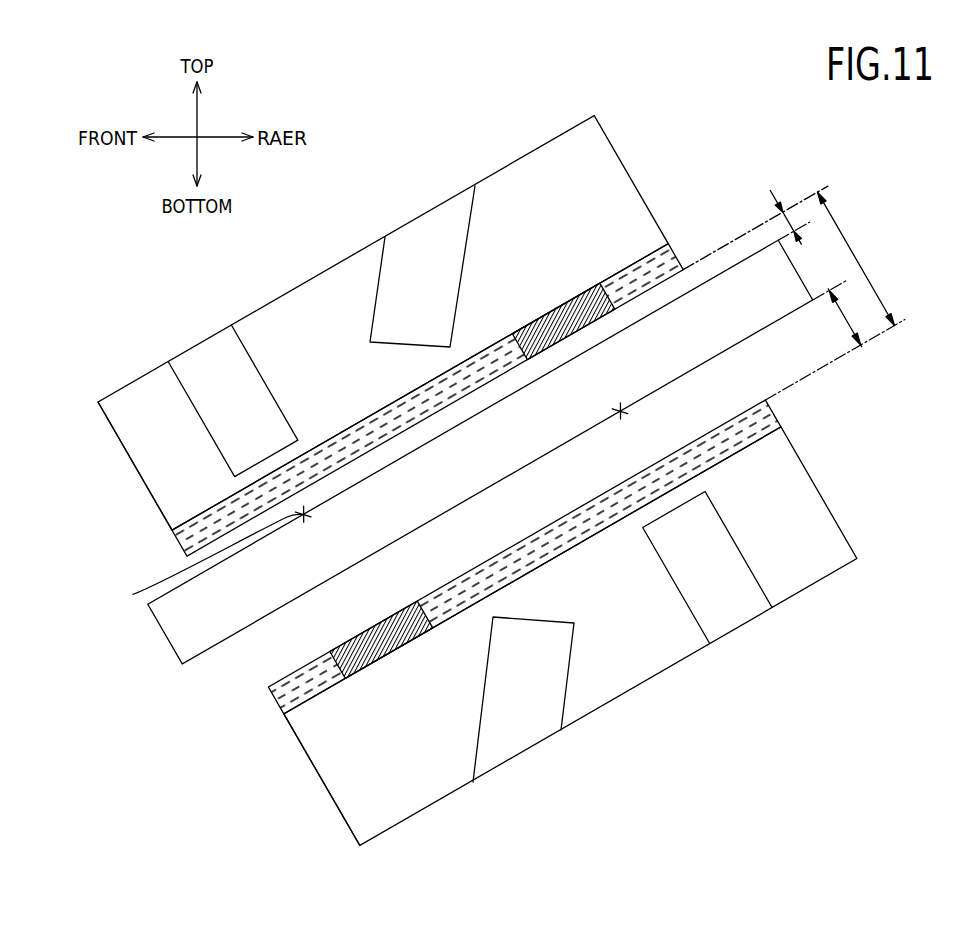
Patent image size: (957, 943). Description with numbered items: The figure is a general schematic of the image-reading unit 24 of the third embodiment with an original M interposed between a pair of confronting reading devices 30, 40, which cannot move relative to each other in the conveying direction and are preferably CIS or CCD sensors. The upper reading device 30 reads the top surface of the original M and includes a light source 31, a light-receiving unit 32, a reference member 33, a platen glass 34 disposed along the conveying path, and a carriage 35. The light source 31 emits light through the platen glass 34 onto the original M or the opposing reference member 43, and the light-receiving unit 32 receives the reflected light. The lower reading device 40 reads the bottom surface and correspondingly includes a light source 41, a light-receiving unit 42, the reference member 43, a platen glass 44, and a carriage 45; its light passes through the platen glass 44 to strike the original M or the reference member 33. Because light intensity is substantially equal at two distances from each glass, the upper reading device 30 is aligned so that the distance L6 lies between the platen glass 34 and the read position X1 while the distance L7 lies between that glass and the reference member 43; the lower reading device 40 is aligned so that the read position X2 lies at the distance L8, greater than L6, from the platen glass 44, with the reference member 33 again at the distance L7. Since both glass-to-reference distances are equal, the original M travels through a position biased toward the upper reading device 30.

The image-reading unit 24 is at (443, 130).
The reading device 30 is at (662, 146).
The light source 31 is at (392, 262).
The light-receiving unit 32 is at (200, 372).
The reference member 33 is at (572, 298).
The platen glass 34 is at (185, 543).
The carriage 35 is at (146, 485).
The original M is at (183, 632).
The read position X1 is at (207, 556).
The read position X2 is at (620, 410).
The reading device 40 is at (864, 464).
The light source 41 is at (537, 687).
The light-receiving unit 42 is at (723, 575).
The reference member 43 is at (370, 660).
The platen glass 44 is at (768, 408).
The carriage 45 is at (336, 807).
The distance L6 is at (759, 233).
The distance L7 is at (856, 259).
The distance L8 is at (819, 332).